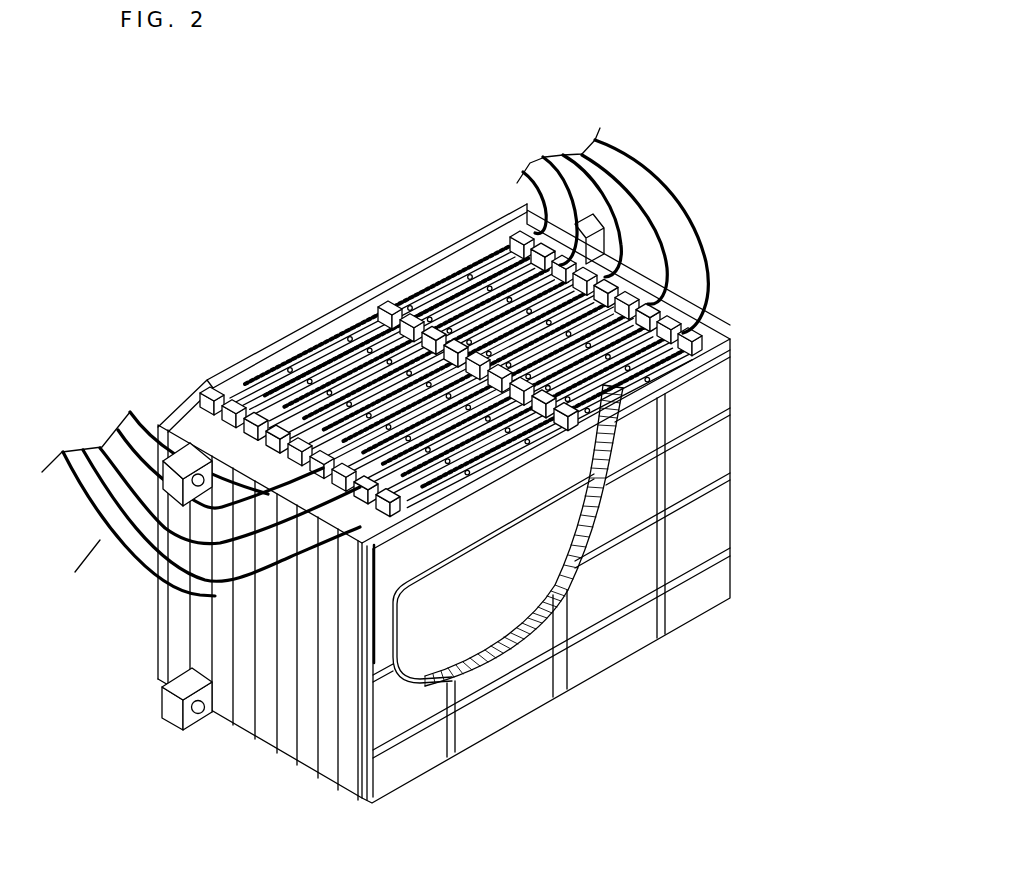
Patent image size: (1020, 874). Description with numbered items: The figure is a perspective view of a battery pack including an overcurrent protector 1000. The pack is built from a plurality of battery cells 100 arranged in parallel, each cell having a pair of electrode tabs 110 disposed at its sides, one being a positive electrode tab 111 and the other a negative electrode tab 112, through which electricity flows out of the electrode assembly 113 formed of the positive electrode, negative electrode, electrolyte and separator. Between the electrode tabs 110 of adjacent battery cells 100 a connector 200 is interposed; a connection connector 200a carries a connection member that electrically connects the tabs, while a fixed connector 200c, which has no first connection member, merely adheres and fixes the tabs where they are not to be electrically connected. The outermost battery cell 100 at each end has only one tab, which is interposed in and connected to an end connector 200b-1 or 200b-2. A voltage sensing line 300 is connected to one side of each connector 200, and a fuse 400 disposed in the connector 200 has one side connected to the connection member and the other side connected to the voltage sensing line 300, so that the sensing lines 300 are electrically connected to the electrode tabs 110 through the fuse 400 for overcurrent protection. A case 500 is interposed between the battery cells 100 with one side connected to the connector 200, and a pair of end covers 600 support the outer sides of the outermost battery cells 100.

The battery pack including overcurrent protector 1000 is at (358, 152).
The battery cell 100 is at (366, 612).
The electrode tab 110 is at (797, 443).
The positive electrode tab 111 is at (500, 462).
The negative electrode tab 112 is at (617, 403).
The electrode assembly 113 is at (483, 618).
The connector 200 is at (290, 224).
The connection connector 200a is at (428, 256).
The end connector 200b-1 is at (540, 455).
The end connector 200b-2 is at (355, 295).
The fixed connector 200c is at (452, 260).
The voltage sensing line 300 is at (637, 153).
The fuse 400 is at (505, 235).
The case 500 is at (330, 775).
The end cover 600 is at (163, 648).